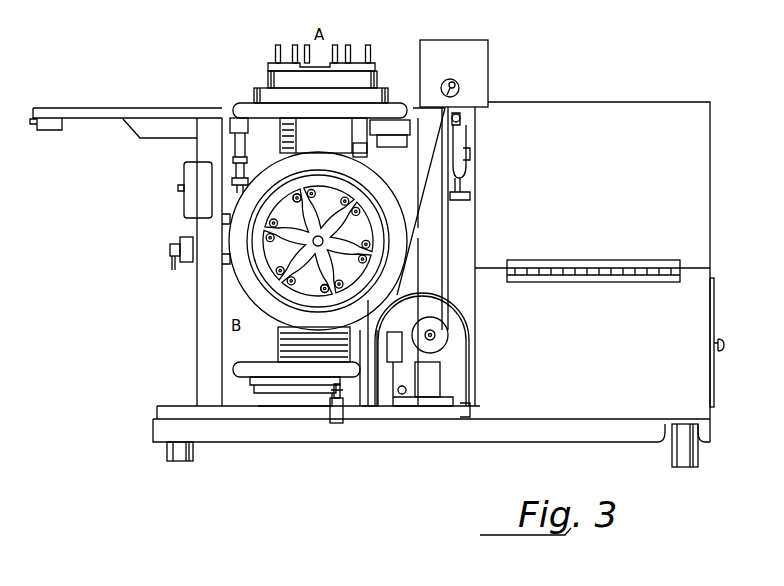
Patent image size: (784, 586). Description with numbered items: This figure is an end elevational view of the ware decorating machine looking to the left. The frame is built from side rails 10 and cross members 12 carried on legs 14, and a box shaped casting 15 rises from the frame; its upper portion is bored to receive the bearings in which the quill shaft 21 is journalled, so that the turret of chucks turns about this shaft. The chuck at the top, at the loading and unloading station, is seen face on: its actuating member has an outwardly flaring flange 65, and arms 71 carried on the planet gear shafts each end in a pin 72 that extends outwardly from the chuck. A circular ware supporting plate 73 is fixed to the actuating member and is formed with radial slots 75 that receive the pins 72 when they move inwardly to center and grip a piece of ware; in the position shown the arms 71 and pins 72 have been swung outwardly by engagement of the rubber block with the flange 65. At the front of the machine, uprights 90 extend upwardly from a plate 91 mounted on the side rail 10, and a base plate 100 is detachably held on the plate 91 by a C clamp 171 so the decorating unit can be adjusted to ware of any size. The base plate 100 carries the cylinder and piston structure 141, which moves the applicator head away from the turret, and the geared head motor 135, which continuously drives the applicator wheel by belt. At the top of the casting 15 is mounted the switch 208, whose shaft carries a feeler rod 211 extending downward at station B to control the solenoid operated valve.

The side rail 10 is at (470, 432).
The cross member 12 is at (706, 427).
The leg 14 is at (168, 448).
The box shaped casting 15 is at (444, 232).
The quill shaft 21 is at (335, 143).
The outwardly flaring flange 65 is at (238, 363).
The arm 71 is at (318, 192).
The pin 72 is at (300, 208).
The circular ware supporting plate 73 is at (330, 232).
The slot 75 is at (323, 276).
The upright 90 is at (200, 345).
The plate 91 is at (247, 412).
The base plate 100 is at (365, 406).
The geared head motor 135 is at (448, 335).
The cylinder and piston structure 141 is at (392, 398).
The C clamp 171 is at (328, 422).
The switch 208 is at (476, 60).
The feeler rod 211 is at (422, 210).